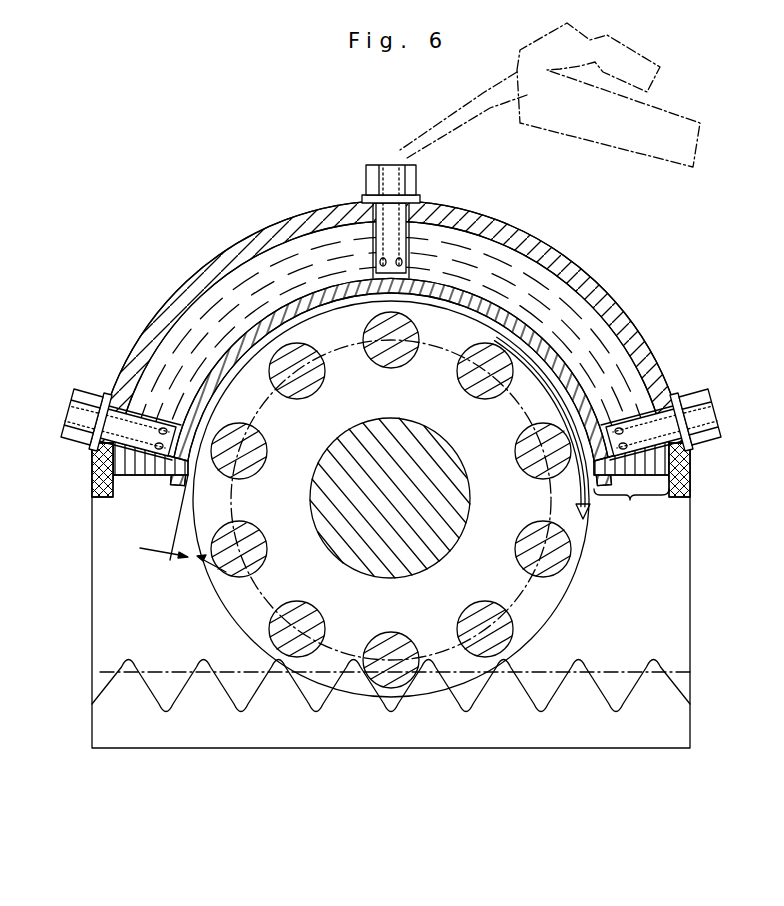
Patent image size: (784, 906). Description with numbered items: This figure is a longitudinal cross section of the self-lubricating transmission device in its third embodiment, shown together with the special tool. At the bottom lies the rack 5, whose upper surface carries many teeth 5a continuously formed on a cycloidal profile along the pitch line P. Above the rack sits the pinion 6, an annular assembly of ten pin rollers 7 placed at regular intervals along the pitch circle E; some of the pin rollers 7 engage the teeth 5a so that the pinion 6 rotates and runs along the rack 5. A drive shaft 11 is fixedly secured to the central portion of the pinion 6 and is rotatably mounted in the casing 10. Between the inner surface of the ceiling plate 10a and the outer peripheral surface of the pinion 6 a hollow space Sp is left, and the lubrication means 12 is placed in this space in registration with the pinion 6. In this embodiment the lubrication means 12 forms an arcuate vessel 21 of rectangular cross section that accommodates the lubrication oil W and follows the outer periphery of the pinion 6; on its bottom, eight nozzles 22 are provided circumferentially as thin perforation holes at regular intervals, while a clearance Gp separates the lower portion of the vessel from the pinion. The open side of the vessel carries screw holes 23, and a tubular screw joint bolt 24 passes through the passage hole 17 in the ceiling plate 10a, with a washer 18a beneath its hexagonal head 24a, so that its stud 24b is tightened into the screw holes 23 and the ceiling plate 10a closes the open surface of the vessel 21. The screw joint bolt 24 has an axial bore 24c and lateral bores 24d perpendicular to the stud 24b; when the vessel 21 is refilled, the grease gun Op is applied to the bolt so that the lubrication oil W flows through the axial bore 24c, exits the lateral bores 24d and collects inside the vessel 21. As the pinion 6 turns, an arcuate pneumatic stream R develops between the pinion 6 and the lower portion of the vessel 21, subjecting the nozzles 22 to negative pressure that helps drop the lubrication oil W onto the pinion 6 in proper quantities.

The rack 5 is at (390, 740).
The teeth 5a is at (226, 688).
The pinion 6 is at (206, 606).
The pin rollers 7 is at (234, 505).
The casing 10 is at (213, 263).
The ceiling plate 10a is at (240, 242).
The drive shaft 11 is at (391, 580).
The lubrication means 12 is at (141, 478).
The passage hole 17 is at (370, 218).
The washer 18a is at (420, 199).
The vessel 21 is at (600, 392).
The nozzles 22 is at (370, 327).
The screw holes 23 is at (100, 490).
The screw joint bolt 24 is at (389, 330).
The hexagonal head 24a is at (418, 170).
The stud 24b is at (406, 237).
The axial bore 24c is at (398, 165).
The lateral bores 24d is at (402, 260).
The lubrication oil W is at (558, 312).
The pneumatic stream R is at (543, 439).
The hollow space Sp is at (631, 510).
The gap Gp is at (183, 537).
The pitch circle E is at (505, 621).
The pitch line P is at (684, 670).
The grease gun Op is at (700, 108).